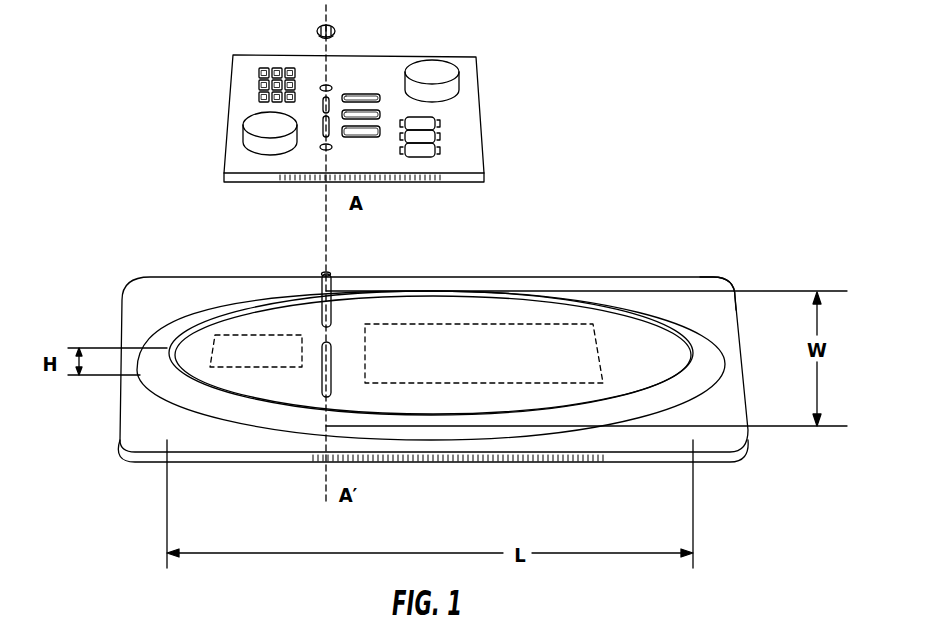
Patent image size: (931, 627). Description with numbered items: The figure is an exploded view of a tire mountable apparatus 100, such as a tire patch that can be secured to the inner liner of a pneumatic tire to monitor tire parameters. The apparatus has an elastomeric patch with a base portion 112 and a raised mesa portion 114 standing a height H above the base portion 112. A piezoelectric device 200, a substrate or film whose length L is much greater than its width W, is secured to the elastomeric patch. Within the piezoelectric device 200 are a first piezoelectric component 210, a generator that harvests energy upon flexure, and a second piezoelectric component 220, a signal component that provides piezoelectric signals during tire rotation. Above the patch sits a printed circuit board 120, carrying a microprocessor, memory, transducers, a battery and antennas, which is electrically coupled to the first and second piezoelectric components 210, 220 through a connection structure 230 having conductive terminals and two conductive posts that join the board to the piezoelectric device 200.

The tire mountable apparatus 100 is at (747, 445).
The base portion 112 is at (717, 308).
The raised mesa portion 114 is at (200, 338).
The printed circuit board 120 is at (483, 118).
The piezoelectric device 200 is at (545, 310).
The first piezoelectric component 210 is at (458, 320).
The second piezoelectric component 220 is at (253, 335).
The connection structure 230 is at (335, 290).